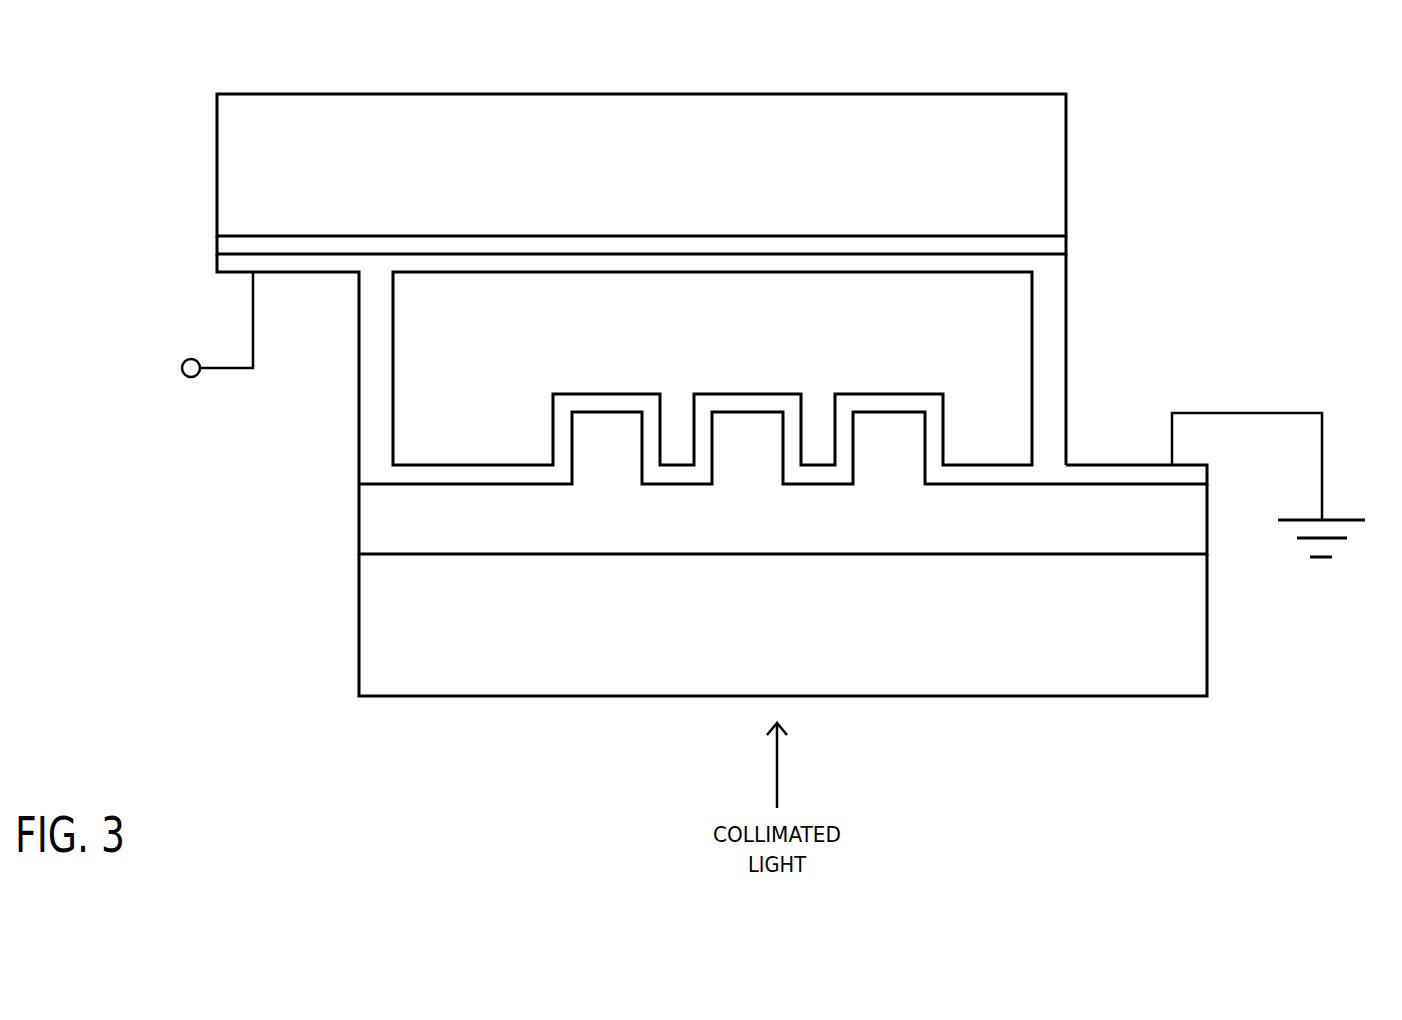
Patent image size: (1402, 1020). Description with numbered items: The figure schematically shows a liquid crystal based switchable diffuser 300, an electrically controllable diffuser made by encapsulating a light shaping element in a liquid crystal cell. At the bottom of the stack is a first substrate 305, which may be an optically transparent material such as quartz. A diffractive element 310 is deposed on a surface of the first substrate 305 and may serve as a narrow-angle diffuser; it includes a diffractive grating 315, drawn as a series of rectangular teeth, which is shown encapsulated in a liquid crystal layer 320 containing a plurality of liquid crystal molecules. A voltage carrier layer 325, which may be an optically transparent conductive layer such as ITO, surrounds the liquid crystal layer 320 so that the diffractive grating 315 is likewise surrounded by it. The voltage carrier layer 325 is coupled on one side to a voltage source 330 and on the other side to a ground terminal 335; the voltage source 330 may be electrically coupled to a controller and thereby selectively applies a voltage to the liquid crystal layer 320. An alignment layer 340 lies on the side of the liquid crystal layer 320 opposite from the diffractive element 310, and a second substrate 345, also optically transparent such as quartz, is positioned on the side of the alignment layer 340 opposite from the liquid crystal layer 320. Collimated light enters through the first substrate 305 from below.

The liquid crystal based switchable diffuser 300 is at (242, 32).
The first substrate 305 is at (1194, 677).
The diffractive element 310 is at (1185, 542).
The diffractive grating 315 is at (822, 381).
The liquid crystal layer 320 is at (998, 456).
The voltage carrier layer 325 is at (1066, 318).
The voltage source 330 is at (190, 312).
The ground terminal 335 is at (1304, 375).
The alignment layer 340 is at (1066, 245).
The second substrate 345 is at (1045, 227).